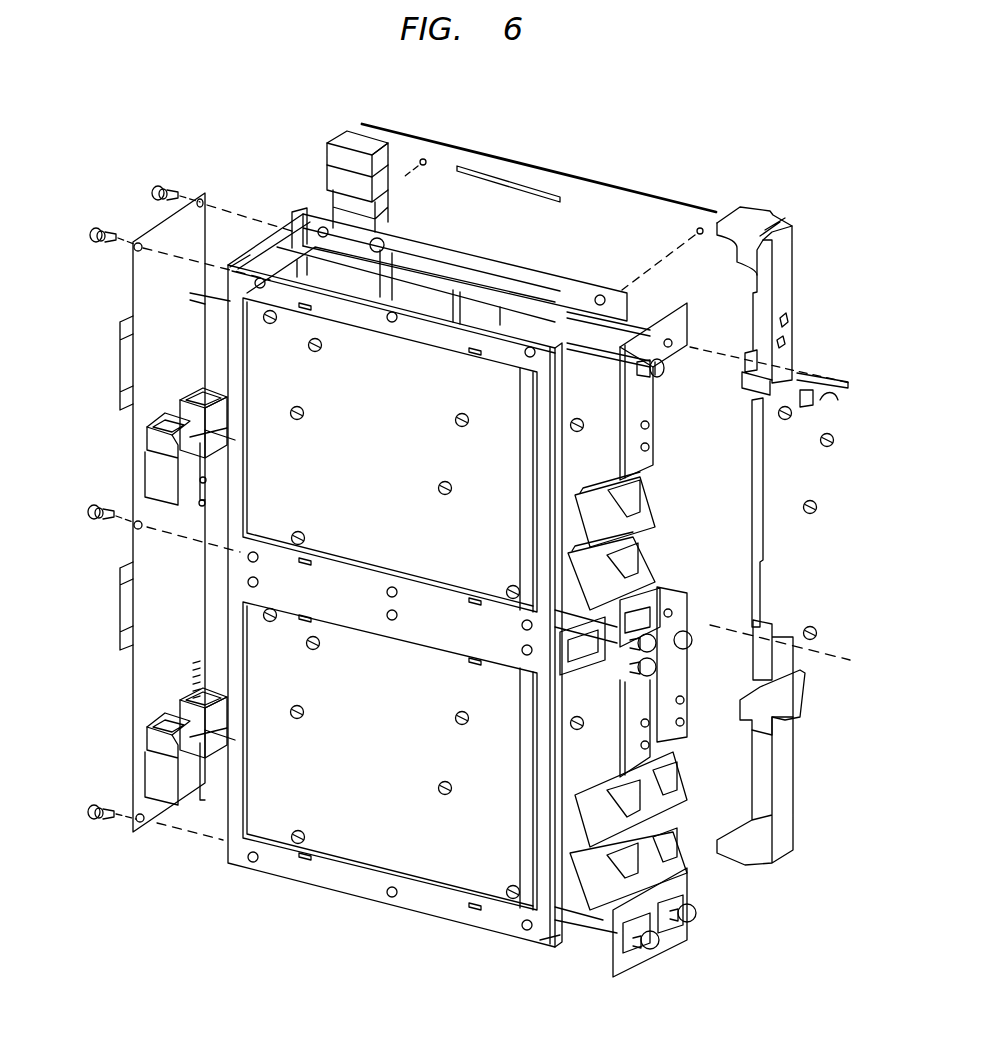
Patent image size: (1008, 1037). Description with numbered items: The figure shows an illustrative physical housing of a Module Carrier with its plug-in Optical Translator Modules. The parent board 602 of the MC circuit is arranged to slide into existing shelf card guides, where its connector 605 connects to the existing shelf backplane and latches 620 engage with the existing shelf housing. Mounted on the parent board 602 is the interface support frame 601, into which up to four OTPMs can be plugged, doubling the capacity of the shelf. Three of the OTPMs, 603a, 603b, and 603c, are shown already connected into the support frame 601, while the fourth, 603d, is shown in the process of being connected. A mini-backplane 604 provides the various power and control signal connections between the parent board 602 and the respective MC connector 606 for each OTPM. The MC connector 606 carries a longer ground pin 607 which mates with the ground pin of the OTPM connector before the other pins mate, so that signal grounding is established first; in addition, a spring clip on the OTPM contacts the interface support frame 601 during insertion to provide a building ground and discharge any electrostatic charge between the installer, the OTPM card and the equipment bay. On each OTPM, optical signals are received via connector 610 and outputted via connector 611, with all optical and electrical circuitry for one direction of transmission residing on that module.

The interface support frame 601 is at (228, 863).
The parent board 602 is at (525, 155).
The OTPM 603a is at (637, 407).
The OTPM 603b is at (673, 682).
The OTPM 603c is at (640, 698).
The OTPM 603d is at (710, 525).
The mini-backplane 604 is at (130, 468).
The connector 605 is at (327, 148).
The MC connector 606 is at (152, 416).
The ground pin 607 is at (210, 447).
The connector 610 is at (630, 498).
The connector 611 is at (628, 565).
The latches 620 is at (795, 250).